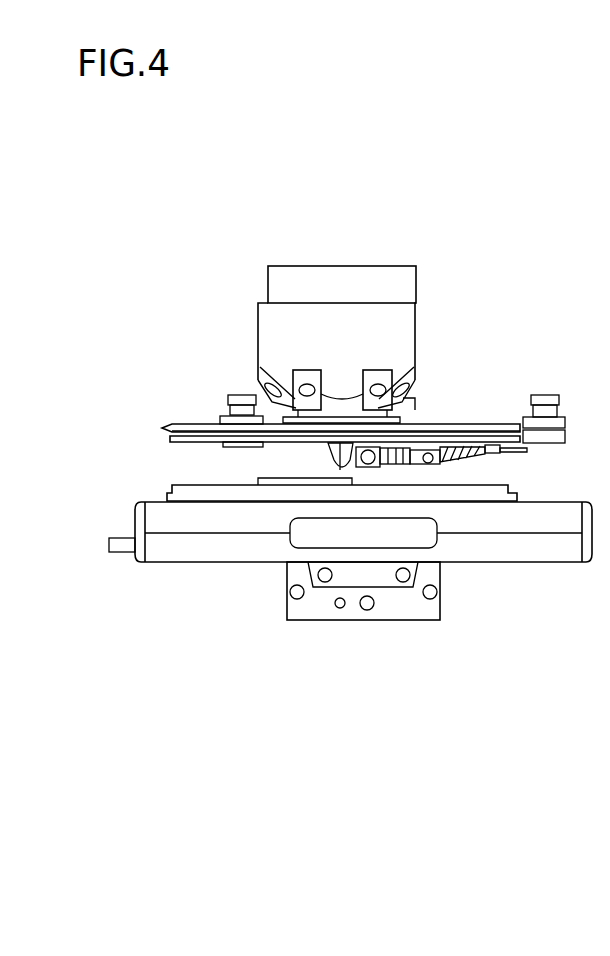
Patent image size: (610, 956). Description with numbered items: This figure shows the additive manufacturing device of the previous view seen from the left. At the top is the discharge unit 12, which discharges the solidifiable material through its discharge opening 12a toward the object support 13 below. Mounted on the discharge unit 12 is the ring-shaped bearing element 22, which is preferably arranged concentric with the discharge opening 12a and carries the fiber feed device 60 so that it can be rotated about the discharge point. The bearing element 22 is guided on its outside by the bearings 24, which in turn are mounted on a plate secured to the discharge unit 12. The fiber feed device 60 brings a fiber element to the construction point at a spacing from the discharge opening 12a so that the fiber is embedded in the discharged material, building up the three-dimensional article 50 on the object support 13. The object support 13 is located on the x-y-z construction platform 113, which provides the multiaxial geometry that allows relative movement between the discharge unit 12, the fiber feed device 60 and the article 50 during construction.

The discharge unit 12 is at (416, 328).
The discharge opening 12a is at (333, 430).
The bearing element 22 is at (471, 423).
The bearings 24 is at (228, 400).
The three-dimensional article 50 is at (272, 478).
The fiber feed device 60 is at (465, 457).
The object support 13 is at (167, 493).
The x-y-z construction platform 113 is at (197, 553).